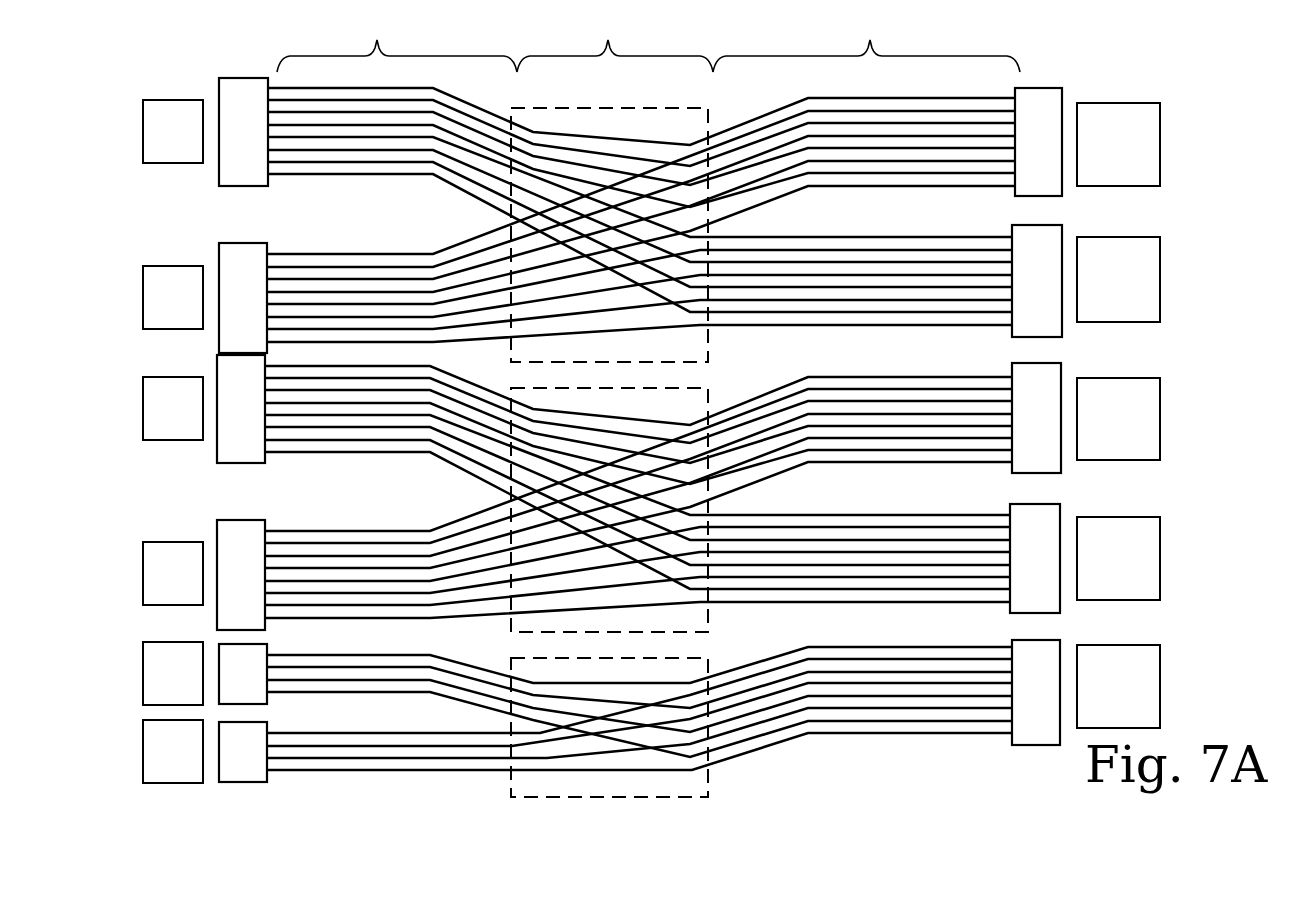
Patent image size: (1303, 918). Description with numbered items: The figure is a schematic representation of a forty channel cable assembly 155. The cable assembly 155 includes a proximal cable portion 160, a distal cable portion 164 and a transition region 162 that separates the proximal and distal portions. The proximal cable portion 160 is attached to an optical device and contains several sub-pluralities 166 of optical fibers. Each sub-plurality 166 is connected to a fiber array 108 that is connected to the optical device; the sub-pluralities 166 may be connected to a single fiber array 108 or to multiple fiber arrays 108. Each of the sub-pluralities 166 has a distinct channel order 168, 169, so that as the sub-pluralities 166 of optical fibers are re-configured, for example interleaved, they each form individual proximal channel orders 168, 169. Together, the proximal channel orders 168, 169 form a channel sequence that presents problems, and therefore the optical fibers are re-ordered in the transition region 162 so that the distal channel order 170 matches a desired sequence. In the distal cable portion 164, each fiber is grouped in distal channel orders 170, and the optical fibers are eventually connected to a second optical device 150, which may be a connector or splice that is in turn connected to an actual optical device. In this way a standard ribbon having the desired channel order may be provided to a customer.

The fiber array 108 is at (153, 146).
The second optical device 150 is at (1098, 159).
The cable assembly 155 is at (868, 754).
The proximal cable portion 160 is at (397, 41).
The transition region 162 is at (612, 403).
The distal cable portion 164 is at (866, 41).
The sub-plurality of optical fibers 166 is at (351, 730).
The proximal channel order 168 is at (248, 243).
The proximal channel order 169 is at (240, 187).
The distal channel order 170 is at (1038, 196).